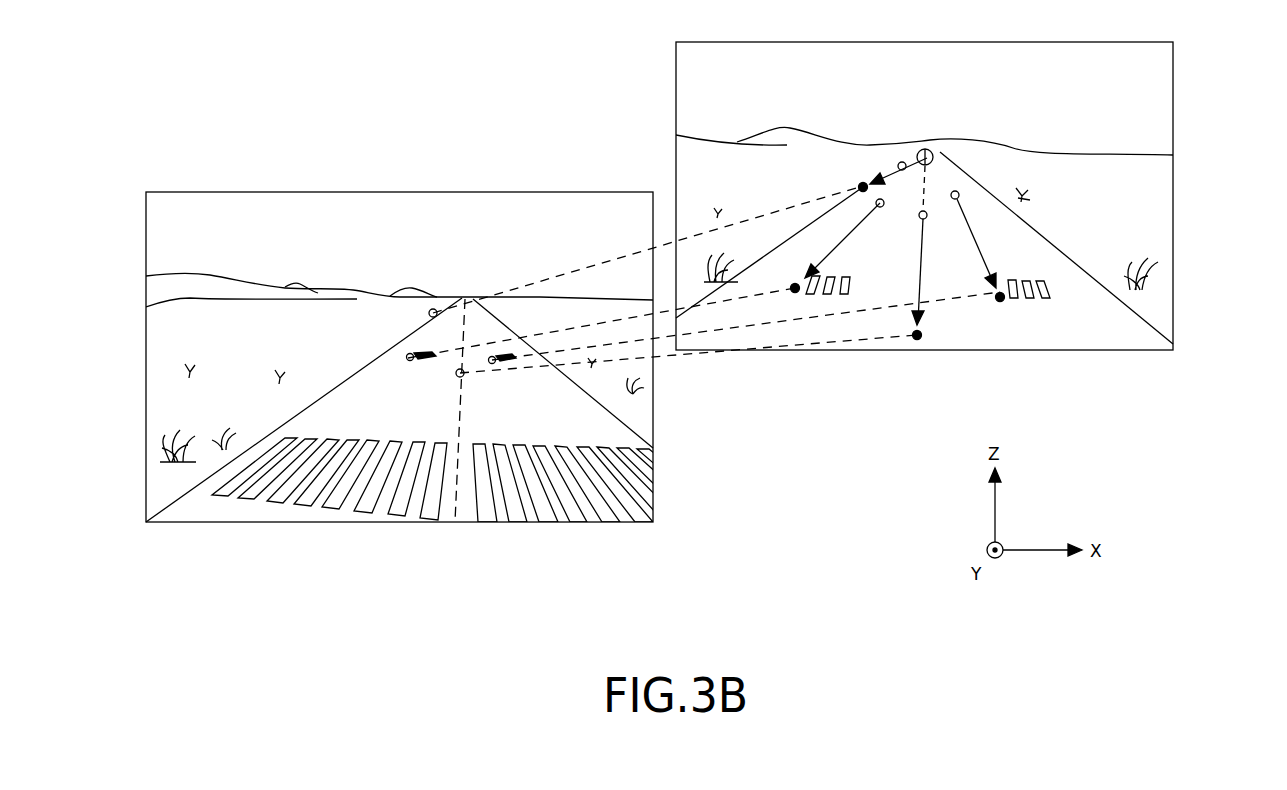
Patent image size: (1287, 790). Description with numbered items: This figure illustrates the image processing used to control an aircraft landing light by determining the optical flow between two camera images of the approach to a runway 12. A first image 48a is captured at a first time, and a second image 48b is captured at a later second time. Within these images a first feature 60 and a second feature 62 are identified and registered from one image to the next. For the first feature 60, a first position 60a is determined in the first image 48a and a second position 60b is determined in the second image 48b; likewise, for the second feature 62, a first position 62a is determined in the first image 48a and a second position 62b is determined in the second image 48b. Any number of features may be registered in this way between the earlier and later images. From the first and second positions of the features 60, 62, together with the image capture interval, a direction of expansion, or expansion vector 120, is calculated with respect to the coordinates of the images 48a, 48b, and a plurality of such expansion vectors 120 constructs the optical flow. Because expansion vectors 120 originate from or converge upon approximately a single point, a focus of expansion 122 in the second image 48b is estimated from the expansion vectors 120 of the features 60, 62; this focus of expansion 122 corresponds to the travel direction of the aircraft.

The runway 12 is at (542, 436).
The first image 48a is at (519, 192).
The second image 48b is at (1173, 325).
The first feature 60 is at (420, 313).
The first position of first feature 60a is at (434, 308).
The second position of first feature 60b is at (858, 187).
The second feature 62 is at (398, 352).
The first position of second feature 62a is at (406, 362).
The second position of second feature 62b is at (795, 293).
The expansion vector 120 is at (980, 251).
The focus of expansion 122 is at (934, 150).